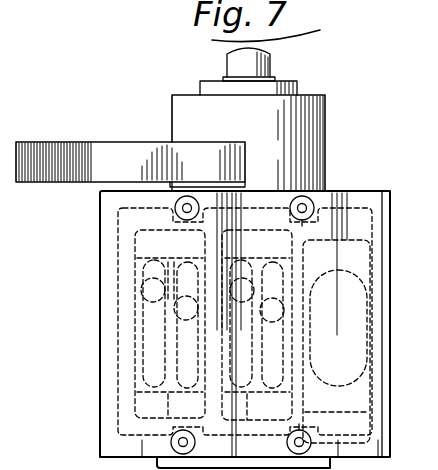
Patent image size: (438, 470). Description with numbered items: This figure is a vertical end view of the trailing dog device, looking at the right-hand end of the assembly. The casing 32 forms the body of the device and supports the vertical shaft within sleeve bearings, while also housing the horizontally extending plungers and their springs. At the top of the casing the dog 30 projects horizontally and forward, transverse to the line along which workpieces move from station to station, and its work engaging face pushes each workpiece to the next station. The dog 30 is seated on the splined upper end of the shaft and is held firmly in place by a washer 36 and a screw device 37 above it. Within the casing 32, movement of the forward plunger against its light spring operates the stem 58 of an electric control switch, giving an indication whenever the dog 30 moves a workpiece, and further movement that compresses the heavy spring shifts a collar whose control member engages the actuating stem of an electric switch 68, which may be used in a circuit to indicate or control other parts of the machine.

The dog 30 is at (171, 113).
The casing 32 is at (100, 385).
The washer 36 is at (297, 83).
The screw device 37 is at (268, 55).
The stem 58 is at (134, 405).
The electric switch 68 is at (233, 390).